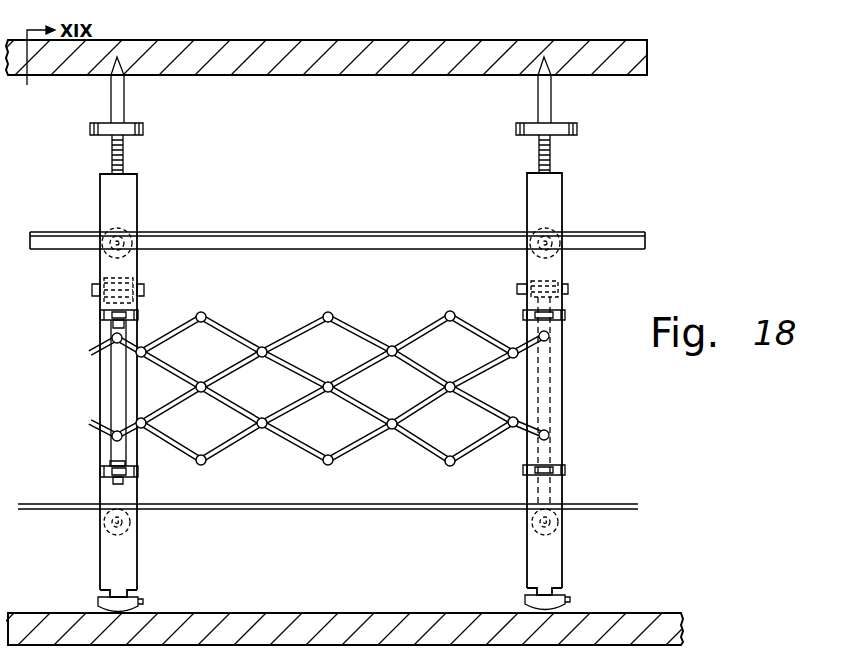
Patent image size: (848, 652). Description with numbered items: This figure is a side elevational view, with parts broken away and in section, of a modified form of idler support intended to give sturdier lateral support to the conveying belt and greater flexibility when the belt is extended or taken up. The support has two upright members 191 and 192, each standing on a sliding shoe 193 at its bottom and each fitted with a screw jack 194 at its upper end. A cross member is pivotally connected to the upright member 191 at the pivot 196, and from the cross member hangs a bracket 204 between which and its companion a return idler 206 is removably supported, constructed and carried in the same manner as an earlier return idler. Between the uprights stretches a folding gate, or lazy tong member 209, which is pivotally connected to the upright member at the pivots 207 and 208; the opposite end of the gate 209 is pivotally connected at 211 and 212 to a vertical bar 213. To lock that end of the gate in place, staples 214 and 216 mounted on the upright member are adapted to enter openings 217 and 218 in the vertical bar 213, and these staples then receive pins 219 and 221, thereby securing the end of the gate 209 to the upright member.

The upright member 191 is at (138, 562).
The upright member 192 is at (565, 214).
The sliding shoe 193 is at (98, 605).
The screw jack 194 is at (125, 162).
The pivotal connection 196 is at (534, 276).
The bracket 204 is at (555, 382).
The return idler 206 is at (112, 535).
The pivotal connection 207 is at (550, 337).
The pivotal connection 208 is at (550, 434).
The folding gate 209 is at (362, 334).
The pivotal connection 211 is at (121, 335).
The pivotal connection 212 is at (121, 441).
The vertical bar 213 is at (126, 396).
The staple 214 is at (104, 319).
The staple 216 is at (103, 478).
The opening 217 is at (124, 314).
The opening 218 is at (128, 479).
The pin 219 is at (104, 300).
The pin 221 is at (110, 463).